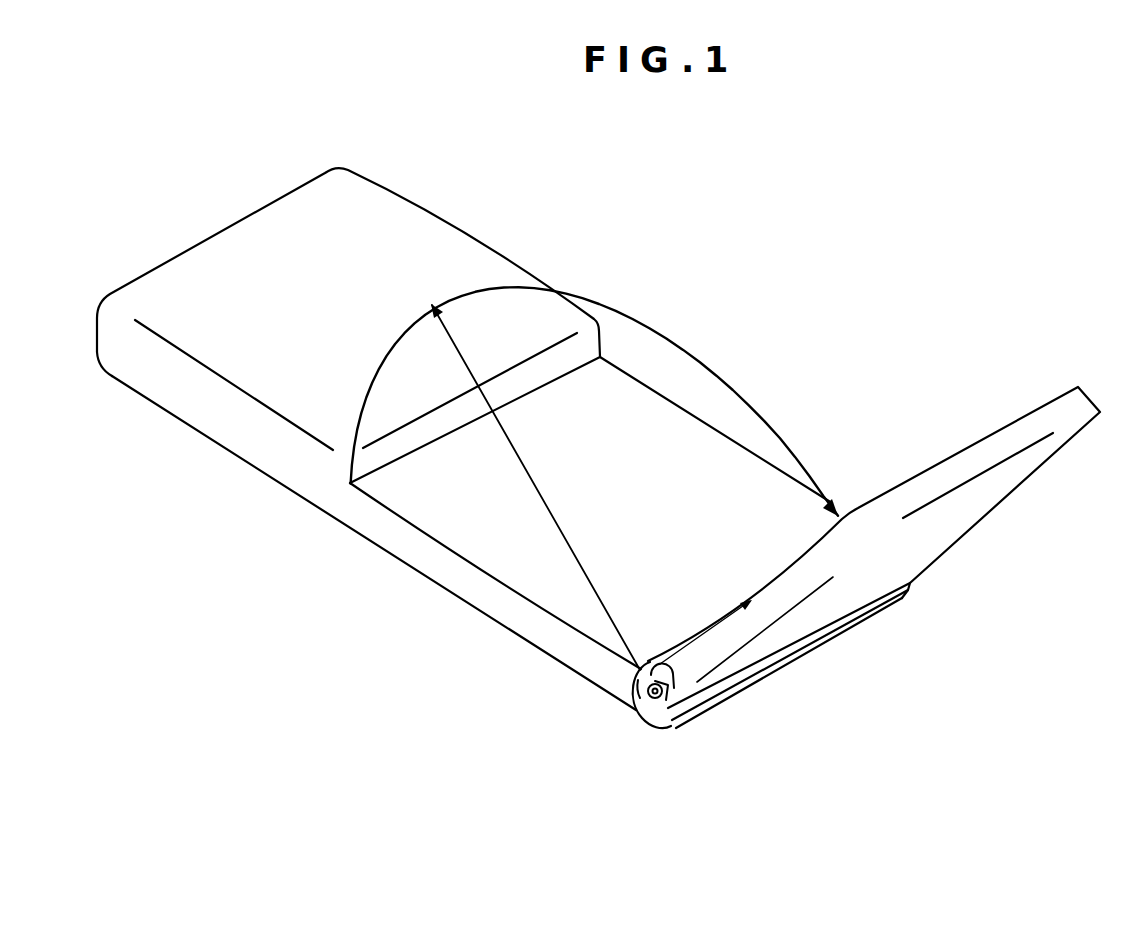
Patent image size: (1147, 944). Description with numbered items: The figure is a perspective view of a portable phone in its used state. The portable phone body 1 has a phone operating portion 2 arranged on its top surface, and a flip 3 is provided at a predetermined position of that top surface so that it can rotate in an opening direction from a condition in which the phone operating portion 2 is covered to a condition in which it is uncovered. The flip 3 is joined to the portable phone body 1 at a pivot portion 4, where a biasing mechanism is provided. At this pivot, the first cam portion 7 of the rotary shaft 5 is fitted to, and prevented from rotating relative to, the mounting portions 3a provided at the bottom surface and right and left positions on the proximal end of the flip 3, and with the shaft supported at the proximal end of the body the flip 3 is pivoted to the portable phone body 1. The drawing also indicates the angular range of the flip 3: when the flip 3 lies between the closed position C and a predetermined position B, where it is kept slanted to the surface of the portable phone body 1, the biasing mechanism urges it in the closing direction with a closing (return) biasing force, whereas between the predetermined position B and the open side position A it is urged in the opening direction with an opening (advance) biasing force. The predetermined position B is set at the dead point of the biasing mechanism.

The portable phone body 1 is at (330, 197).
The phone operating portion 2 is at (507, 577).
The flip 3 is at (942, 540).
The mounting portions 3a is at (659, 657).
The pivot portion 4 is at (634, 712).
The rotary shaft 5 is at (660, 707).
The first cam portion 7 is at (640, 687).
The open side position A is at (732, 387).
The predetermined position B is at (460, 353).
The closed position C is at (372, 392).